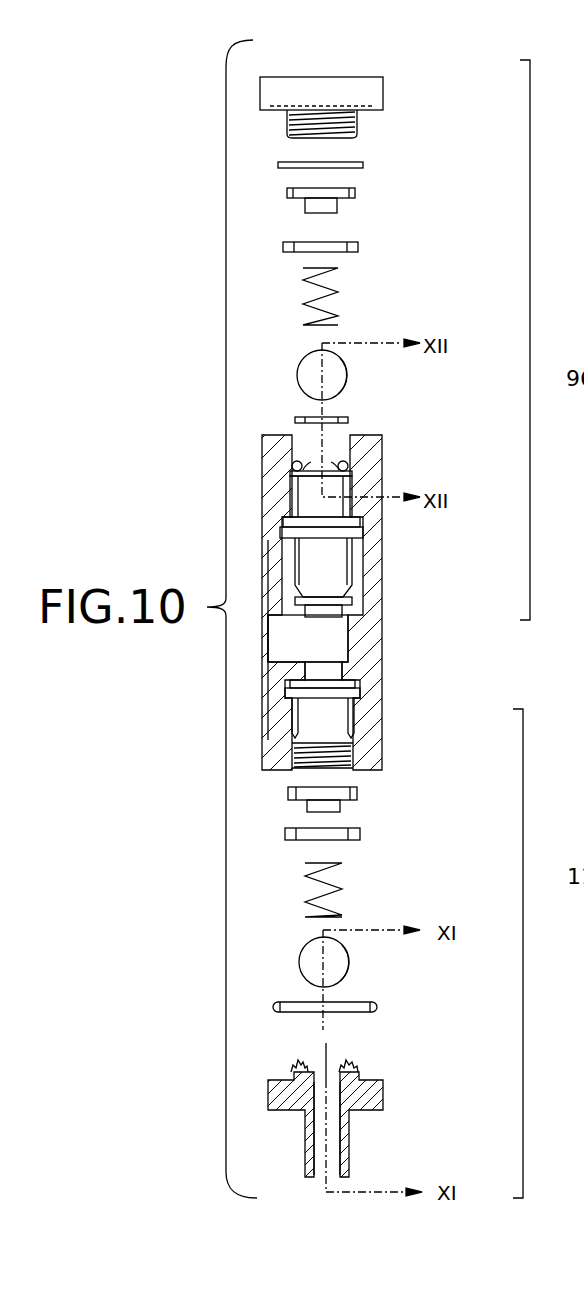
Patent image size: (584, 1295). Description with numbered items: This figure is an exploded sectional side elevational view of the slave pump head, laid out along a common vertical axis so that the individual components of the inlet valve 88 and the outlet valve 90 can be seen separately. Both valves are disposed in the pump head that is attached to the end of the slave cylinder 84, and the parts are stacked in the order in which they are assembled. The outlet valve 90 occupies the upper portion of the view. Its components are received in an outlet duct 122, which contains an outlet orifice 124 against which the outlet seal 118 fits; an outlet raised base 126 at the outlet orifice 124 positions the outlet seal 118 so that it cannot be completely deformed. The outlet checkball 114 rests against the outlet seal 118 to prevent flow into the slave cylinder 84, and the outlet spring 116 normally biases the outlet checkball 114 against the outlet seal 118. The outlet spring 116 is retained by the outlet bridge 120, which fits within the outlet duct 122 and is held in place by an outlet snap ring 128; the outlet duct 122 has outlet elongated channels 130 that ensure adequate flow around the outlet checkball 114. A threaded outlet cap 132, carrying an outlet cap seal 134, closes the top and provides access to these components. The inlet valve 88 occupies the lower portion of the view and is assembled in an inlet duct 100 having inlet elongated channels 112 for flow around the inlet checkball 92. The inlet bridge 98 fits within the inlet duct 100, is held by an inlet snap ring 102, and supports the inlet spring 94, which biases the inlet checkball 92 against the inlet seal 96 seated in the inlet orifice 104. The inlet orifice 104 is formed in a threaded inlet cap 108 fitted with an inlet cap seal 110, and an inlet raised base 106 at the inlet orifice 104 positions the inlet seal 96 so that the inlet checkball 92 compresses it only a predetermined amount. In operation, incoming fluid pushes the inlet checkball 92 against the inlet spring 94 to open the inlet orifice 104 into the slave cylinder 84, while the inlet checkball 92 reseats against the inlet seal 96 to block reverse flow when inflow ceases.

The slave cylinder 84 is at (308, 643).
The inlet valve 88 is at (523, 933).
The outlet valve 90 is at (530, 287).
The inlet checkball 92 is at (335, 958).
The inlet spring 94 is at (330, 880).
The inlet seal 96 is at (353, 1075).
The inlet bridge 98 is at (357, 793).
The inlet duct 100 is at (322, 732).
The inlet snap ring 102 is at (360, 832).
The inlet orifice 104 is at (335, 1065).
The inlet raised base 106 is at (348, 1053).
The threaded inlet cap 108 is at (363, 1100).
The inlet cap seal 110 is at (372, 1005).
The inlet elongated channels 112 is at (295, 713).
The outlet checkball 114 is at (333, 378).
The outlet spring 116 is at (330, 287).
The outlet seal 118 is at (348, 418).
The outlet bridge 120 is at (356, 195).
The outlet duct 122 is at (293, 503).
The outlet orifice 124 is at (327, 617).
The outlet raised base 126 is at (340, 460).
The outlet snap ring 128 is at (358, 248).
The outlet elongated channels 130 is at (327, 563).
The threaded outlet cap 132 is at (341, 77).
The outlet cap seal 134 is at (363, 165).